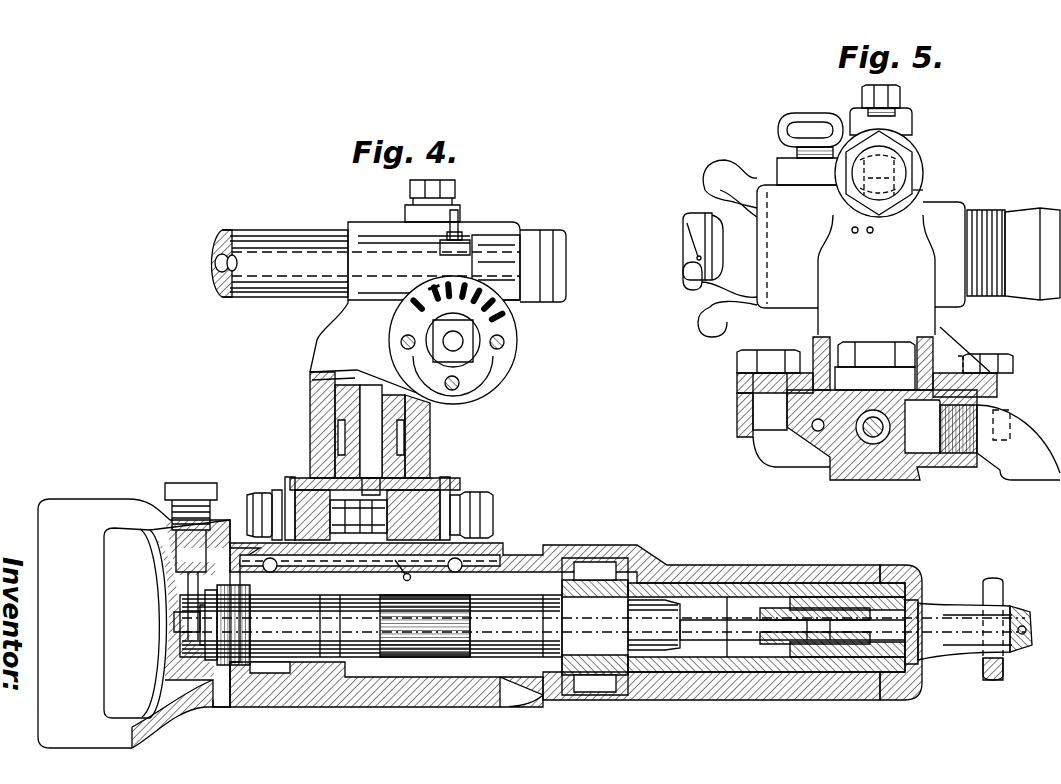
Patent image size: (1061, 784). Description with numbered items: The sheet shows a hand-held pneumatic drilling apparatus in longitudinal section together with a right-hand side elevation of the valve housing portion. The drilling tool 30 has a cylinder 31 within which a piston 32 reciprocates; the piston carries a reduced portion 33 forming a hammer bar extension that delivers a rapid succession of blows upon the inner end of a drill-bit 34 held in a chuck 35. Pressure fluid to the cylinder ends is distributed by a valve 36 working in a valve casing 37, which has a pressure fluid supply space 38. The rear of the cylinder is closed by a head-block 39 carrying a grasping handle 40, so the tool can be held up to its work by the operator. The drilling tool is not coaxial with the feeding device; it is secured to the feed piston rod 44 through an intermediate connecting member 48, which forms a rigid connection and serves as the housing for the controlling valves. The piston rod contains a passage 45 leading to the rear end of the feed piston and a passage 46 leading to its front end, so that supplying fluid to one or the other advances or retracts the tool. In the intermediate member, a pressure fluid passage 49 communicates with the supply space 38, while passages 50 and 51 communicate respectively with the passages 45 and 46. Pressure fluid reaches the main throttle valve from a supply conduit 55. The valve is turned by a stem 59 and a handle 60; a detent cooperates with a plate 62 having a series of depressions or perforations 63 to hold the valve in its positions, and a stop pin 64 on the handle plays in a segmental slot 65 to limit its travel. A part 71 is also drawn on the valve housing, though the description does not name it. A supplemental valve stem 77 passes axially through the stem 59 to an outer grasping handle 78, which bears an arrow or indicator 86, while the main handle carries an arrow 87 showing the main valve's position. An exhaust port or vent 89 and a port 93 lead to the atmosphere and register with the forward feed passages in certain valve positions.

In FIG. 4, the drilling tool 30 is at (576, 613).
In FIG. 4, the cylinder 31 is at (388, 668).
In FIG. 4, the piston 32 is at (315, 672).
In FIG. 4, the reduced portion 33 is at (448, 660).
In FIG. 4, the drill-bit 34 is at (940, 612).
In FIG. 4, the chuck 35 is at (756, 585).
In FIG. 4, the pressure fluid distributing valve 36 is at (411, 578).
In FIG. 5, the pressure fluid distributing valve 36 is at (873, 444).
In FIG. 4, the valve casing 37 is at (440, 465).
In FIG. 4, the pressure fluid supply space 38 is at (370, 490).
In FIG. 4, the head-block 39 is at (218, 705).
In FIG. 4, the grasping handle 40 is at (42, 625).
In FIG. 4, the piston rod 44 is at (282, 233).
In FIG. 4, the passage 45 is at (222, 288).
In FIG. 5, the passage 45 is at (845, 163).
In FIG. 4, the passage 46 is at (212, 262).
In FIG. 5, the passage 46 is at (915, 155).
In FIG. 4, the intermediate connecting member 48 is at (320, 420).
In FIG. 5, the intermediate connecting member 48 is at (770, 368).
In FIG. 4, the pressure fluid passage 49 is at (335, 380).
In FIG. 5, the passage 50 is at (858, 193).
In FIG. 5, the passage 51 is at (905, 195).
In FIG. 5, the pressure fluid supply conduit 55 is at (1022, 238).
In FIG. 4, the stem 59 is at (455, 350).
In FIG. 5, the handle 60 is at (702, 337).
In FIG. 4, the plate 62 is at (503, 337).
In FIG. 4, the depressions or perforations 63 is at (420, 318).
In FIG. 4, the stop pin 64 is at (455, 389).
In FIG. 4, the segmental slot 65 is at (470, 362).
In FIG. 4, the pin 71 is at (459, 212).
In FIG. 5, the pin 71 is at (794, 116).
In FIG. 4, the stem 77 is at (458, 346).
In FIG. 5, the grasping handle 78 is at (690, 290).
In FIG. 5, the arrow or indicator 86 is at (683, 222).
In FIG. 5, the arrow 87 is at (703, 175).
In FIG. 5, the exhaust port or vent 89 is at (855, 233).
In FIG. 5, the port 93 is at (871, 233).